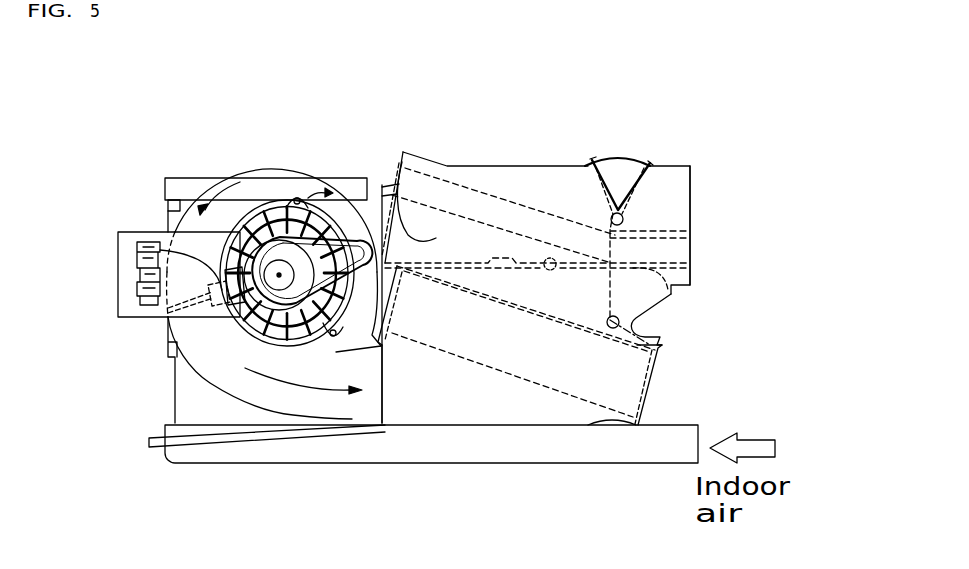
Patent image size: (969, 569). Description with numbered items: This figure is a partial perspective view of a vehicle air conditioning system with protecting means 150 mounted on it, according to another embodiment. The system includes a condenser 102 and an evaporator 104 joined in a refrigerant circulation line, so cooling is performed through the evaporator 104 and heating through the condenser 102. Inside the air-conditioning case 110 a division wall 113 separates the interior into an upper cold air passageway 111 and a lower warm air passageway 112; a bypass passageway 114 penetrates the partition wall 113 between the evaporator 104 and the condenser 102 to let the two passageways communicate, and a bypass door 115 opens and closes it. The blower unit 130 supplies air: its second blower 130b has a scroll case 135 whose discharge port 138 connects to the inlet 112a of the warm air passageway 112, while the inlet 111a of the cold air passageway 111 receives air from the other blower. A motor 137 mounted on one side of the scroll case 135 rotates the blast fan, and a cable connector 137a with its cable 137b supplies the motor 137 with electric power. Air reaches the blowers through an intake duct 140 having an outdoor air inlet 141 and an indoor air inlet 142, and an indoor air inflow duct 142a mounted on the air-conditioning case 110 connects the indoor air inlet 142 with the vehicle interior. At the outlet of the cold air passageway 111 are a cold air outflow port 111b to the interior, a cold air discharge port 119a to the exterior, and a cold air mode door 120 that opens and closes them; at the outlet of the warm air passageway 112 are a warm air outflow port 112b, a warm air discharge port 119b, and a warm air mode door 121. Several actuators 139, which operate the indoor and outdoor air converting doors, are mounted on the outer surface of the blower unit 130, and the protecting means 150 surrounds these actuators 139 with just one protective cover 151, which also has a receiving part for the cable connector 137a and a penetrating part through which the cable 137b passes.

The condenser 102 is at (543, 368).
The evaporator 104 is at (474, 190).
The air-conditioning case 110 is at (569, 165).
The cold air passageway 111 is at (398, 163).
The inlet of the cold air passageway 111a is at (410, 222).
The cold air outflow port 111b is at (688, 166).
The warm air passageway 112 is at (487, 400).
The inlet of the warm air passageway 112a is at (398, 402).
The warm air outflow port 112b is at (690, 286).
The division wall 113 is at (457, 260).
The bypass passageway 114 is at (538, 260).
The bypass door 115 is at (528, 260).
The cold air discharge port 119a is at (602, 170).
The warm air discharge port 119b is at (662, 341).
The cold air mode door 120 is at (627, 164).
The warm air mode door 121 is at (668, 306).
The blower unit 130 is at (128, 205).
The second blower 130b is at (230, 160).
The scroll case 135 is at (214, 380).
The motor 137 is at (272, 200).
The cable connector 137a is at (185, 321).
The cable 137b is at (140, 250).
The discharge port 138 is at (349, 410).
The actuator 139 is at (137, 262).
The intake duct 140 is at (173, 368).
The outdoor air inlet 141 is at (192, 178).
The indoor air inlet 142 is at (226, 437).
The indoor air inflow duct 142a is at (440, 445).
The protecting means 150 is at (68, 286).
The protective cover 151 is at (118, 300).